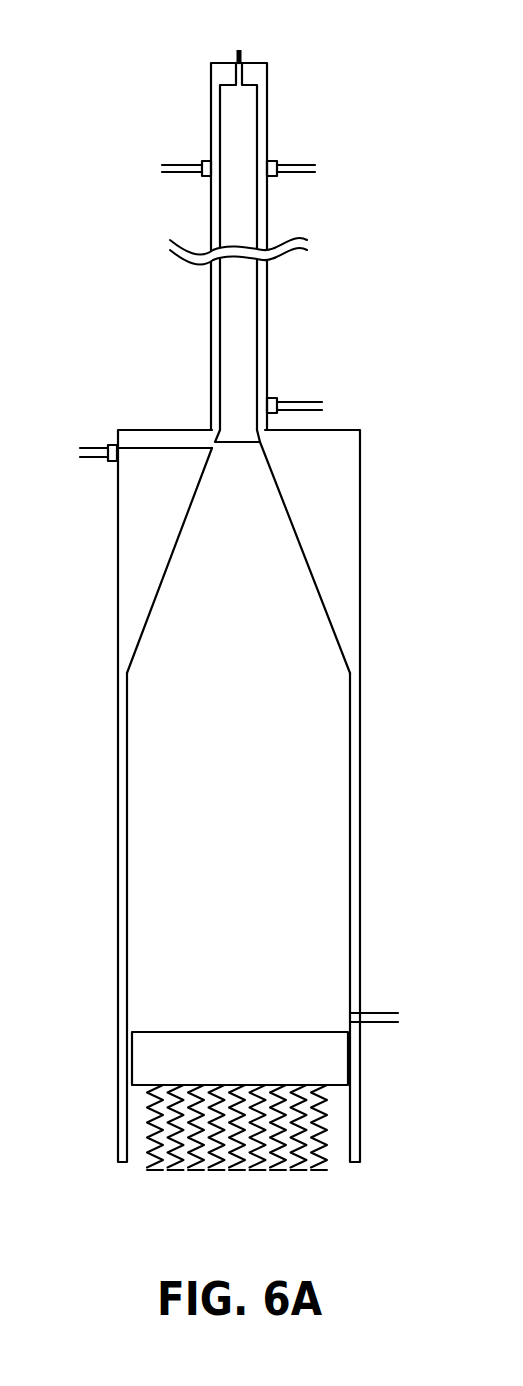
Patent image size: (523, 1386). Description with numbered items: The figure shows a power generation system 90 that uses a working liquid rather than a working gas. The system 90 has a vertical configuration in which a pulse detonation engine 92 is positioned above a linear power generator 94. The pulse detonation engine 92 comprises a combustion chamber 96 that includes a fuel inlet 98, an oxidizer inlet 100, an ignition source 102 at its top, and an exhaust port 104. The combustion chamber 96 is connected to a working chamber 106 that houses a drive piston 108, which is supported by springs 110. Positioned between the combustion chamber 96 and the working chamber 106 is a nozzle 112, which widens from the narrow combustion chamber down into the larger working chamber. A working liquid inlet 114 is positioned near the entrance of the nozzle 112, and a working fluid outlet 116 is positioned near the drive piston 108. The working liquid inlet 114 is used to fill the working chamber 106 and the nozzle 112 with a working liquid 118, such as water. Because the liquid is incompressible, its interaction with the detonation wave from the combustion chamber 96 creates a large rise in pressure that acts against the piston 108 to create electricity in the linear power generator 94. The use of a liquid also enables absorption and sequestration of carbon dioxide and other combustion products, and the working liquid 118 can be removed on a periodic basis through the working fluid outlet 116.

The power generation system 90 is at (419, 337).
The pulse detonation engine 92 is at (126, 284).
The linear power generator 94 is at (61, 1043).
The combustion chamber 96 is at (210, 366).
The fuel inlet 98 is at (183, 164).
The oxidizer inlet 100 is at (295, 164).
The ignition source 102 is at (241, 59).
The exhaust port 104 is at (291, 398).
The working chamber 106 is at (361, 836).
The drive piston 108 is at (260, 1071).
The springs 110 is at (199, 1195).
The nozzle 112 is at (285, 560).
The working liquid inlet 114 is at (100, 446).
The working fluid outlet 116 is at (376, 1011).
The working liquid 118 is at (260, 827).